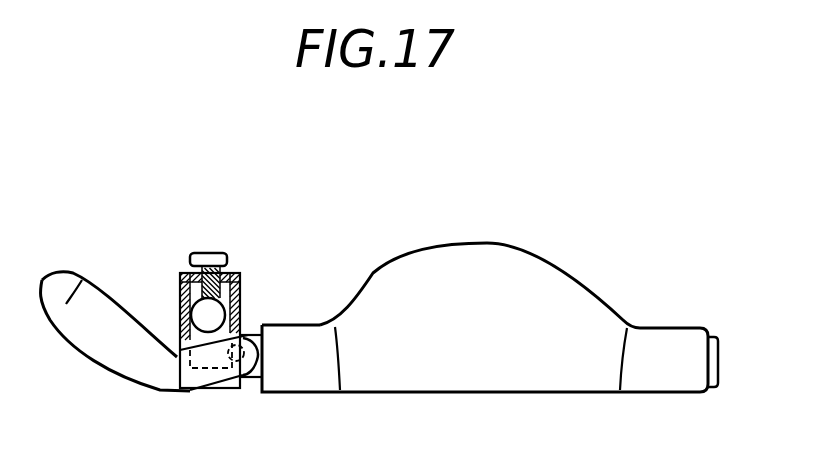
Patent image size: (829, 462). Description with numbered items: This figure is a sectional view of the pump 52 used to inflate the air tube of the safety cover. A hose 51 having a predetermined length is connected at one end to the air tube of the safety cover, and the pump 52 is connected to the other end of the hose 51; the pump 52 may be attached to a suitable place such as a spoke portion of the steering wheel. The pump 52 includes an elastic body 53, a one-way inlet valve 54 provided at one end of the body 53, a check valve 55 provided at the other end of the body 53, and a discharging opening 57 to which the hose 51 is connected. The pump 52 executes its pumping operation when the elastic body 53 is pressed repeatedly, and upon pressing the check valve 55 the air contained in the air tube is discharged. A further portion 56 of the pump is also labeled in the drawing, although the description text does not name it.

The blade 51 is at (117, 262).
The handle body 52 is at (487, 244).
The dome-shaped grip portion 53 is at (520, 288).
The end cap 54 is at (713, 347).
The clamp screw 55 is at (205, 257).
The handle connecting portion 56 is at (262, 327).
The hook/pivot member 57 is at (253, 333).